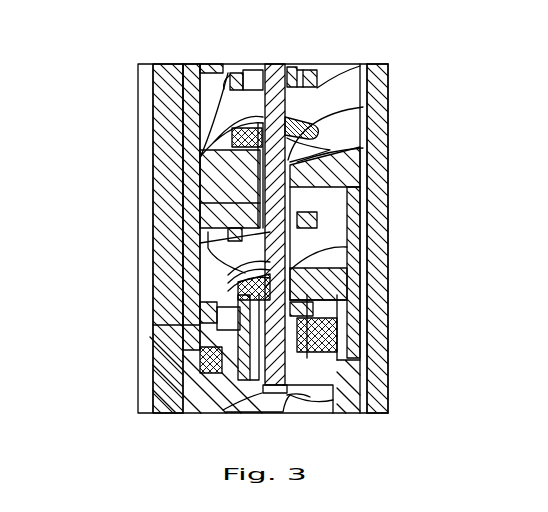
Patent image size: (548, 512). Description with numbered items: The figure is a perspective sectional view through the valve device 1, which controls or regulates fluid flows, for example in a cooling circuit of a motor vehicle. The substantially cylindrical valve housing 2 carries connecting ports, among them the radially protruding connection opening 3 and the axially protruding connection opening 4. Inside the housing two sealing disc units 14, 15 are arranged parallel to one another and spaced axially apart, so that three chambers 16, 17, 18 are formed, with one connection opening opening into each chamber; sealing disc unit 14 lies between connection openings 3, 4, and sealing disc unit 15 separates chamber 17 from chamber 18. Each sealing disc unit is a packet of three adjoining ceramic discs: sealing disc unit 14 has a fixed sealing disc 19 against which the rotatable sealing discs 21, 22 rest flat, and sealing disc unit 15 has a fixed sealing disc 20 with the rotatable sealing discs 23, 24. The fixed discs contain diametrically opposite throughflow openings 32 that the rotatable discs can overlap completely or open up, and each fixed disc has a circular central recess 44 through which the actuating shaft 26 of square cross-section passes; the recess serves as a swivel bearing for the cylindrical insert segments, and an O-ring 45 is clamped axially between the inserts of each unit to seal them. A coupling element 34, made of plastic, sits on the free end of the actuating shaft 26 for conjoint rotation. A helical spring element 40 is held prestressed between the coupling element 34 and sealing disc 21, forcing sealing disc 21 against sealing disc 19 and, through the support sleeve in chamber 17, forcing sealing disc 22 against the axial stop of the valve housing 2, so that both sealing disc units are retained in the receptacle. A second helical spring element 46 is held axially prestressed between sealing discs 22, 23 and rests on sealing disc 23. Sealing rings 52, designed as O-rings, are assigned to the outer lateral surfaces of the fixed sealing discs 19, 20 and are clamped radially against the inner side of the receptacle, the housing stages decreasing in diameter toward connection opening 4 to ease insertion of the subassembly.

The valve device 1 is at (62, 62).
The valve housing 2 is at (388, 372).
The connection opening 3 is at (223, 103).
The connection opening 4 is at (200, 258).
The sealing disc unit 14 is at (440, 167).
The sealing disc unit 15 is at (440, 302).
The chamber 16 is at (200, 108).
The chamber 17 is at (228, 280).
The chamber 18 is at (250, 412).
The fixed sealing disc 19 is at (200, 190).
The fixed sealing disc 20 is at (200, 338).
The rotatable sealing disc 21 is at (200, 160).
The rotatable sealing disc 22 is at (200, 228).
The rotatable sealing disc 23 is at (388, 280).
The rotatable sealing disc 24 is at (388, 350).
The actuating shaft 26 is at (284, 66).
The throughflow opening 32 is at (360, 398).
The coupling element 34 is at (240, 80).
The spring element 40 is at (388, 252).
The central recess 44 is at (388, 158).
The O-ring 45 is at (388, 218).
The spring element 46 is at (388, 112).
The sealing ring 52 is at (388, 165).